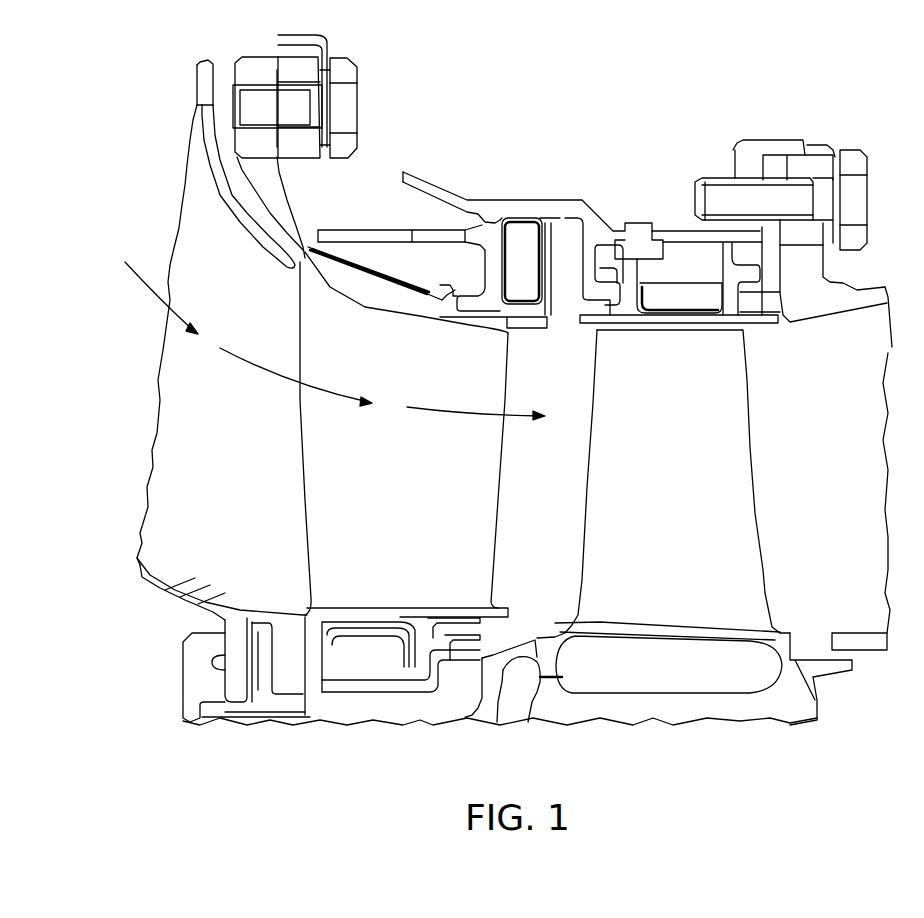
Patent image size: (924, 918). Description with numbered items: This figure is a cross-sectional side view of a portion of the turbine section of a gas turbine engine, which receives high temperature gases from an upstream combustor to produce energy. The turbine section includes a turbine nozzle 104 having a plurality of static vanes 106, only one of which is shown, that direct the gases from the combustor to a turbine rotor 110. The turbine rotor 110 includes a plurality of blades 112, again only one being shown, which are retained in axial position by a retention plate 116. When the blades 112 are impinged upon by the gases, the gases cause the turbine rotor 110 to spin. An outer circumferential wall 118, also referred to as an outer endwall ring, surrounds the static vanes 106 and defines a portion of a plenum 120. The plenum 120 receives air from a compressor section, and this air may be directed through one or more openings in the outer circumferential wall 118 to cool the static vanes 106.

The turbine nozzle 104 is at (351, 431).
The static vanes 106 is at (365, 582).
The turbine rotor 110 is at (536, 574).
The blades 112 is at (690, 447).
The retention plate 116 is at (492, 682).
The outer circumferential wall 118 is at (537, 324).
The plenum 120 is at (486, 121).